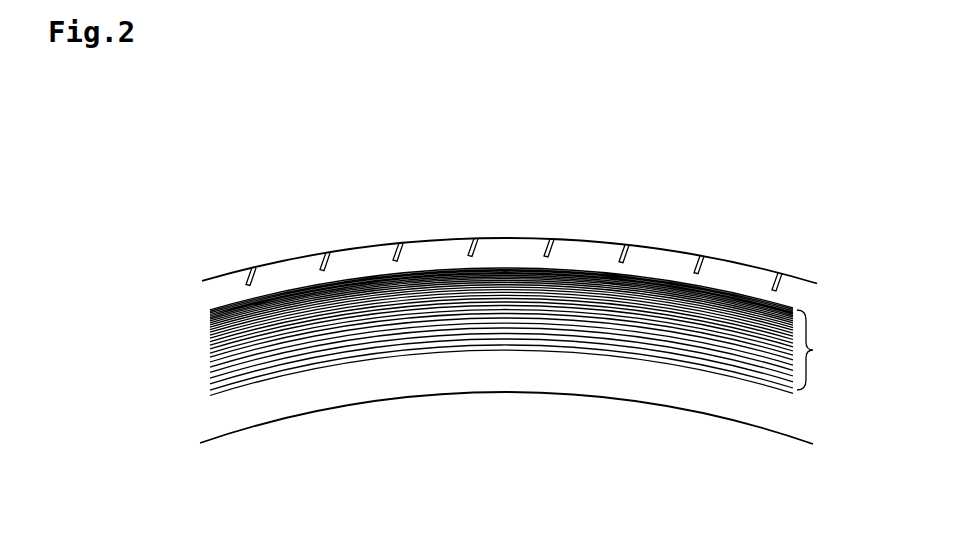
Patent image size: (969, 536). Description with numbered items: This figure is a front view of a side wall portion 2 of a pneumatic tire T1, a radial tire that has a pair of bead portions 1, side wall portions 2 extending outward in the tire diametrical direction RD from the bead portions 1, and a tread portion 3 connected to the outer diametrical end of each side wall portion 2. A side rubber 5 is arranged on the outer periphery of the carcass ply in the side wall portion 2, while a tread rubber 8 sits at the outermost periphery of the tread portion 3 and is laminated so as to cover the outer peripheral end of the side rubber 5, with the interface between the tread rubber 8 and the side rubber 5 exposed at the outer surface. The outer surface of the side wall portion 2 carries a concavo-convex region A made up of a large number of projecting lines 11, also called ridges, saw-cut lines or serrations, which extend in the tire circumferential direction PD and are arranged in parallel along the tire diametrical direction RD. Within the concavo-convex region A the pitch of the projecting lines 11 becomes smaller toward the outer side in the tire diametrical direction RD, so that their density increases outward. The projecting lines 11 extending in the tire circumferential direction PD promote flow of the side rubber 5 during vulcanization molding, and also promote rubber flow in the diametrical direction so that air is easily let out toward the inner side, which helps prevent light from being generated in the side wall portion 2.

The bead portion 1 is at (326, 422).
The side wall portion 2 is at (797, 407).
The tread portion 3 is at (305, 250).
The side rubber 5 is at (635, 363).
The tread rubber 8 is at (412, 240).
The projecting line 11 is at (447, 346).
The concavo-convex region A is at (818, 350).
The pneumatic tire T1 is at (757, 222).
The tire circumferential direction PD is at (580, 198).
The tire diametrical direction RD is at (183, 323).